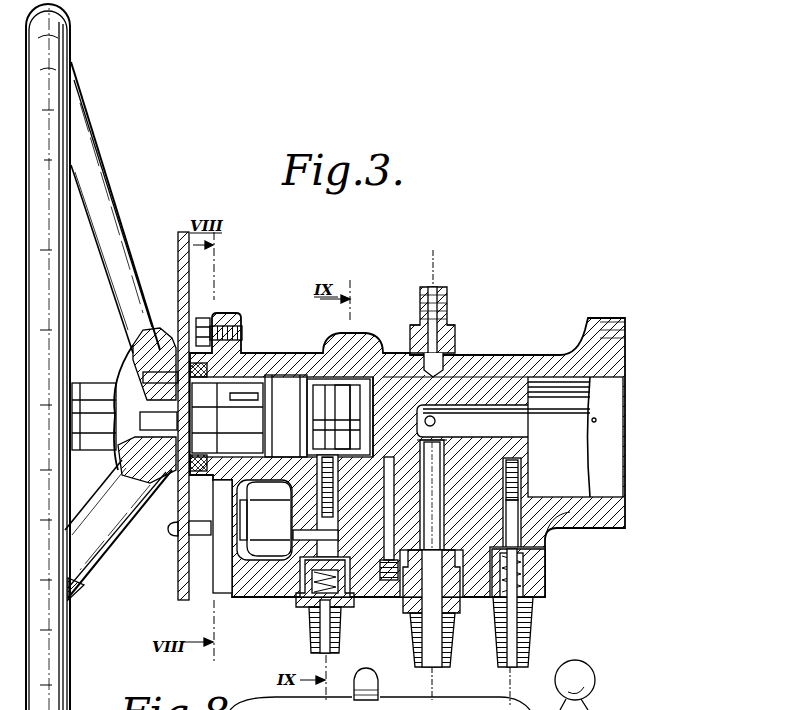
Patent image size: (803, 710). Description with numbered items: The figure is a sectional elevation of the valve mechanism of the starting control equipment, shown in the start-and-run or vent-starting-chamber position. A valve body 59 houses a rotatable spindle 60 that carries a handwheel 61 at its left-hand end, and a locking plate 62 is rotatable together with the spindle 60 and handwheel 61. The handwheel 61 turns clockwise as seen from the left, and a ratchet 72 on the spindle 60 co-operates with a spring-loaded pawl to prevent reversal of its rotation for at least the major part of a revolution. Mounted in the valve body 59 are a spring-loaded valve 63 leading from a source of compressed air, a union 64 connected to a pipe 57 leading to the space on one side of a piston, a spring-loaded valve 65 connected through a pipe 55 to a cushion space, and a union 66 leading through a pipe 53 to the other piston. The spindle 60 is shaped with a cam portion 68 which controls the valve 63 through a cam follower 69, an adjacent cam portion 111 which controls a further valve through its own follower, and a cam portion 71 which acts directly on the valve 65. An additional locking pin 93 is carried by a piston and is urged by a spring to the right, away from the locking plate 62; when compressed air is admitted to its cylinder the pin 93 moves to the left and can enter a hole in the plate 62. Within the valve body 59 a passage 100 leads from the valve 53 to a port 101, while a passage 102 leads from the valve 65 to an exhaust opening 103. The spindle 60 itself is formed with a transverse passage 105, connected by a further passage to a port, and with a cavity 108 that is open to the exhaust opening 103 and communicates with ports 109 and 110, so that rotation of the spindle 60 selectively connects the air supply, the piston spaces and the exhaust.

The pipe 53 is at (436, 272).
The pipe 55 is at (511, 681).
The pipe 57 is at (433, 681).
The valve body 59 is at (487, 363).
The rotatable spindle 60 is at (283, 393).
The handwheel 61 is at (60, 352).
The locking plate 62 is at (178, 240).
The spring-loaded valve 63 is at (303, 553).
The union 64 is at (433, 653).
The spring-loaded valve 65 is at (527, 557).
The union 66 is at (448, 311).
The cam portion 68 is at (325, 404).
The cam follower 69 is at (327, 447).
The cam portion 71 is at (510, 383).
The ratchet 72 is at (235, 400).
The locking pin 93 is at (172, 530).
The passage 100 is at (376, 552).
The port 101 is at (365, 497).
The passage 102 is at (560, 507).
The exhaust opening 103 is at (620, 455).
The transverse passage 105 is at (410, 347).
The cavity 108 is at (530, 430).
The port 109 is at (437, 422).
The port 110 is at (434, 455).
The cam portion 111 is at (348, 393).